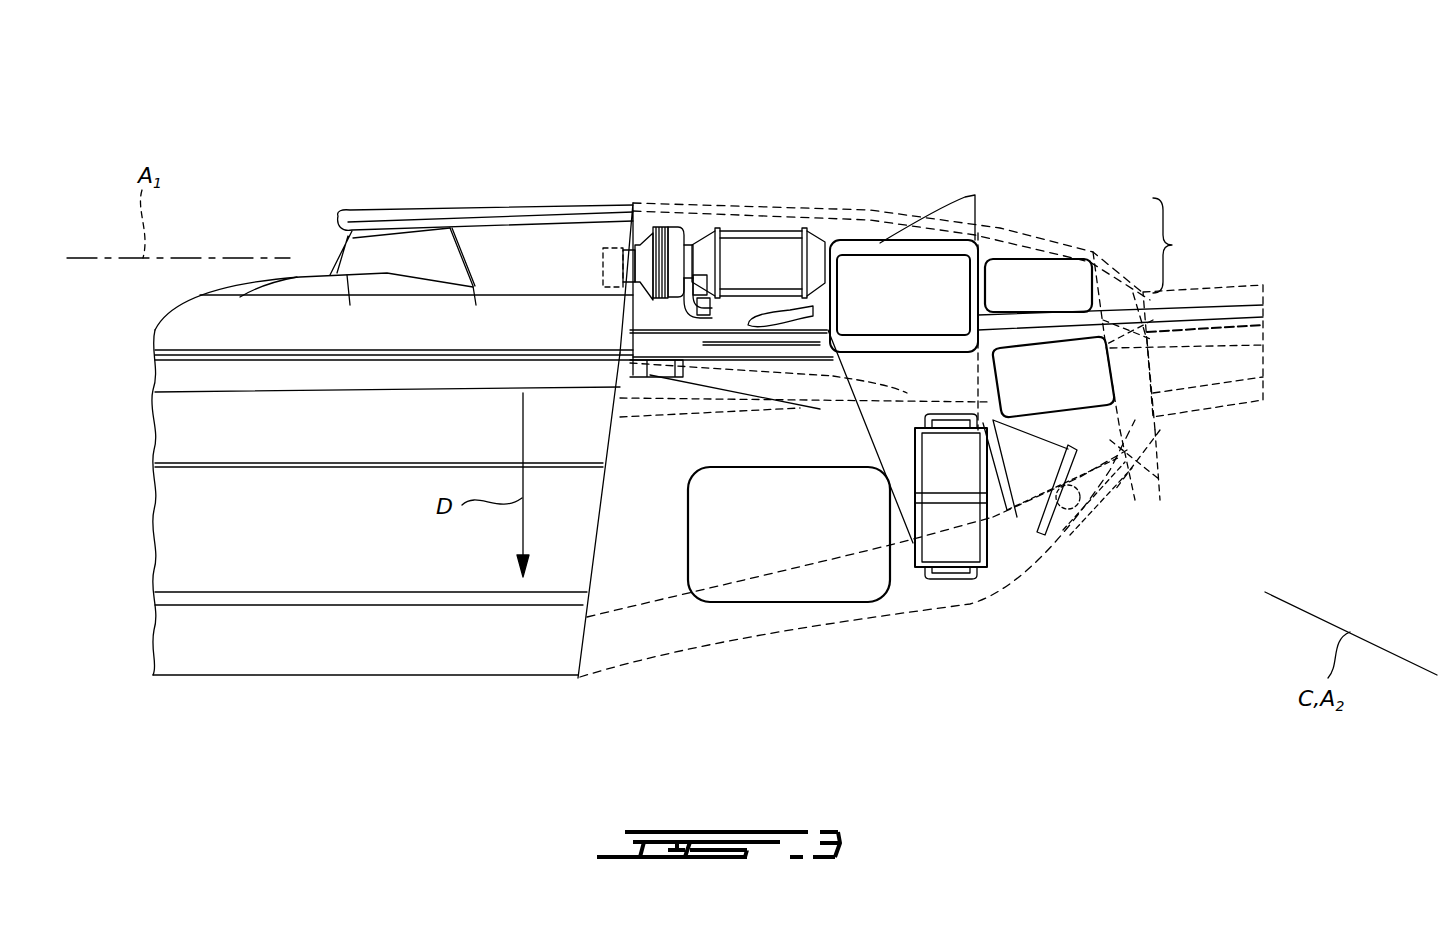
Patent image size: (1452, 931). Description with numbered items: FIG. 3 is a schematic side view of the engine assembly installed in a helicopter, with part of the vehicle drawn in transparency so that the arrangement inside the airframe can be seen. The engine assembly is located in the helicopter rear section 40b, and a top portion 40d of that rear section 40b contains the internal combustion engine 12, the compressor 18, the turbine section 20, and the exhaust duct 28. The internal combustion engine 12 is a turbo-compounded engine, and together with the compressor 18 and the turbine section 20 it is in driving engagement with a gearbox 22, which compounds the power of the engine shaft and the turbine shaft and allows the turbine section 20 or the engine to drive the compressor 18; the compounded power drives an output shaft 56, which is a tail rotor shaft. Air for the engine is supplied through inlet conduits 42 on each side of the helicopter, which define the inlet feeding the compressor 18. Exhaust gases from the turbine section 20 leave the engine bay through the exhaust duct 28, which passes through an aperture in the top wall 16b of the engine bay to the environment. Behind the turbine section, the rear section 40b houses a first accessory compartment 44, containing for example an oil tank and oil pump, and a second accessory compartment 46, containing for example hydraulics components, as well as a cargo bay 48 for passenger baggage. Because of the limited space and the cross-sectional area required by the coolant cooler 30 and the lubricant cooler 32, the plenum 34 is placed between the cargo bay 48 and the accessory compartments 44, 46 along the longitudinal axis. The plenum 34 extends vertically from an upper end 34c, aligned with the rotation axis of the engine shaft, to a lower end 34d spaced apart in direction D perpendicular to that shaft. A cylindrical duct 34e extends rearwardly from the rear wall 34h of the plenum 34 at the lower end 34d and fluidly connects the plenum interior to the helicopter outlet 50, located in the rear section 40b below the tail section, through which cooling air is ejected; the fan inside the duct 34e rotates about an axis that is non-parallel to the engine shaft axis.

The internal combustion engine 12 is at (771, 311).
The top wall 16b is at (1000, 231).
The compressor 18 is at (662, 230).
The turbine section 20 is at (747, 258).
The gearbox 22 is at (680, 224).
The exhaust duct 28 is at (936, 200).
The coolant cooler 30 is at (915, 304).
The lubricant cooler 32 is at (965, 479).
The plenum 34 is at (847, 407).
The upper end 34c is at (858, 204).
The lower end 34d is at (970, 612).
The duct 34e is at (1018, 534).
The rear wall 34h is at (997, 347).
The rear section 40b is at (1110, 262).
The top portion 40d is at (1187, 245).
The inlet conduits 42 is at (548, 270).
The first accessory compartment 44 is at (1040, 285).
The second accessory compartment 46 is at (1058, 385).
The cargo bay 48 is at (791, 543).
The outlet 50 is at (1086, 505).
The output shaft 56 is at (1263, 306).